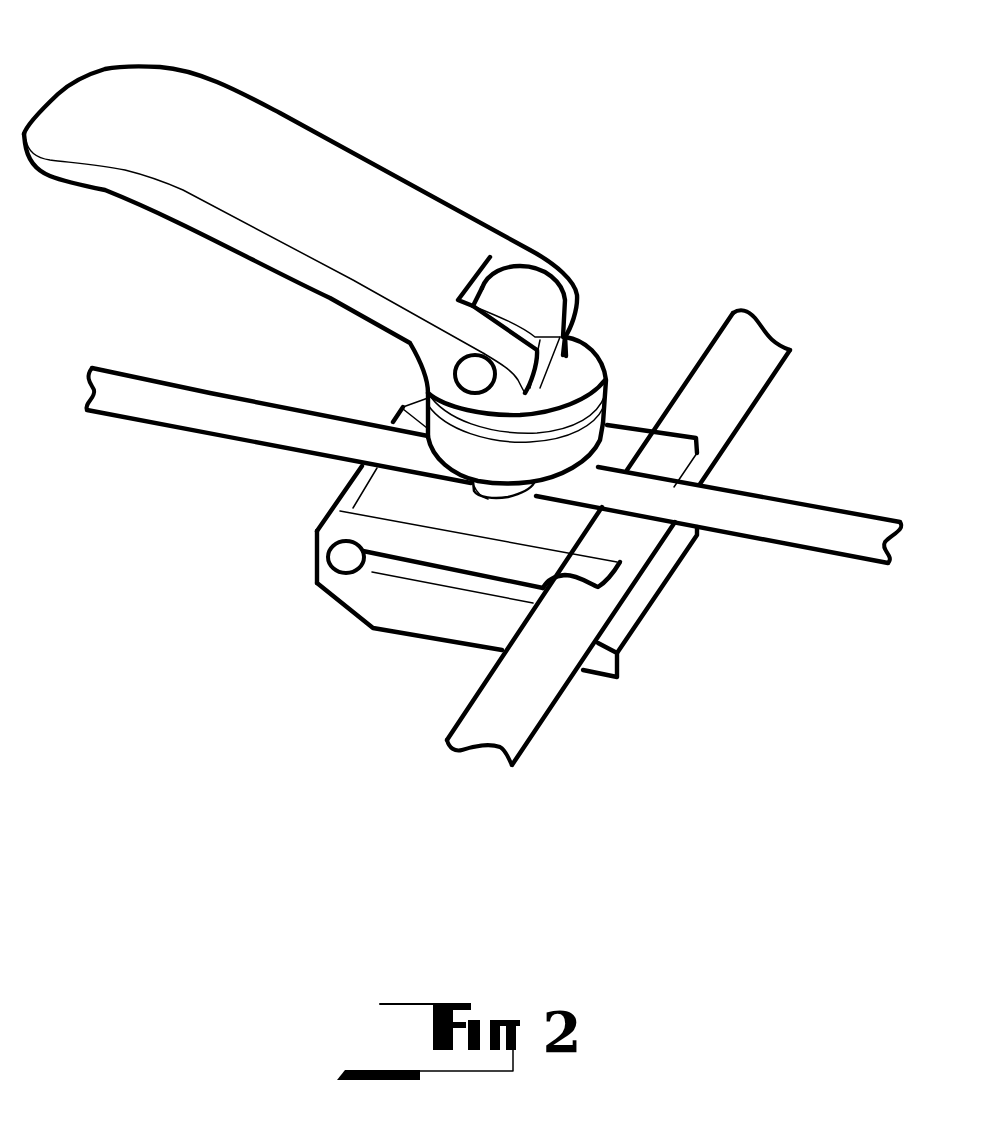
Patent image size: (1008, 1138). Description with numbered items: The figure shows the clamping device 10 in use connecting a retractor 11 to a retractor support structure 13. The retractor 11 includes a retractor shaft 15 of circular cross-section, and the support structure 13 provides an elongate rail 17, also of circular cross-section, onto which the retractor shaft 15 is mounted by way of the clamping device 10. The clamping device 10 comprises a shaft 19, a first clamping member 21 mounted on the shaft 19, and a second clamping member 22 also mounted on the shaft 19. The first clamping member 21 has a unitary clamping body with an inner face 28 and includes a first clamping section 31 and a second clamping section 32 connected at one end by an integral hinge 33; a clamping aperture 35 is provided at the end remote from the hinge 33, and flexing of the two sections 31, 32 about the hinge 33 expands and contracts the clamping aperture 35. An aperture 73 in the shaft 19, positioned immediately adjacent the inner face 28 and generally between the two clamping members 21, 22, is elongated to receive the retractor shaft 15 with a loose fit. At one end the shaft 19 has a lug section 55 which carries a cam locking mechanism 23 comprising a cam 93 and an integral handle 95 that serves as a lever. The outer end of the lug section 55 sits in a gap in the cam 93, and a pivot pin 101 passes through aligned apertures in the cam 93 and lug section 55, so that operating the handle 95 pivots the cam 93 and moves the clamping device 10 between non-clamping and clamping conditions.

The clamping device 10 is at (364, 152).
The retractor 11 is at (846, 500).
The retractor support structure 13 is at (540, 748).
The retractor shaft 15 is at (845, 568).
The rail 17 is at (455, 733).
The shaft 19 is at (488, 496).
The first clamping member 21 is at (316, 587).
The second clamping member 22 is at (598, 449).
The cam locking mechanism 23 is at (278, 142).
The inner face 28 is at (665, 455).
The first clamping section 31 is at (357, 600).
The second clamping section 32 is at (353, 525).
The integral hinge 33 is at (322, 558).
The clamping aperture 35 is at (563, 574).
The lug section 55 is at (528, 287).
The aperture 73 is at (522, 482).
The cam 93 is at (578, 296).
The handle 95 is at (228, 84).
The pivot pin 101 is at (468, 376).